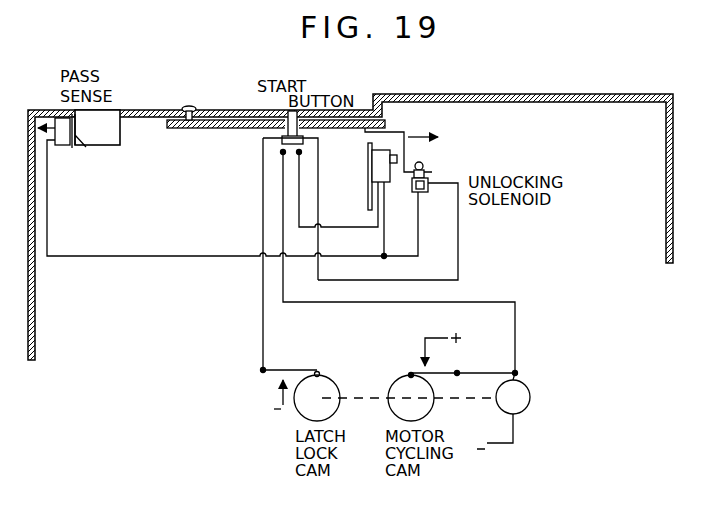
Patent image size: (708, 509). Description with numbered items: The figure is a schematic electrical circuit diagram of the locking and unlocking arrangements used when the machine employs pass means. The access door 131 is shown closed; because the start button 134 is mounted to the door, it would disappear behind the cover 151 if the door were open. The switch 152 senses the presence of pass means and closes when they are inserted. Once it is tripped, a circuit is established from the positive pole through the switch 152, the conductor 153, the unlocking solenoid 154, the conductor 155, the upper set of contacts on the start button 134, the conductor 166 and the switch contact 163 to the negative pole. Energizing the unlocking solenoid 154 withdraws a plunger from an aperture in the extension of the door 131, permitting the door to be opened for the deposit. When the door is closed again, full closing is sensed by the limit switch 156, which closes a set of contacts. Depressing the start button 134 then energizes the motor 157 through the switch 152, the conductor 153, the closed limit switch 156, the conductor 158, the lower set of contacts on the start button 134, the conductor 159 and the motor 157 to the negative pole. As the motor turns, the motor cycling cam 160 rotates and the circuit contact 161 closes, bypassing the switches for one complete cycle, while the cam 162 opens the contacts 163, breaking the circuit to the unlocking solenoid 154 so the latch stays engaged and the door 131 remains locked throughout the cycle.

The access door 131 is at (212, 130).
The start button 134 is at (287, 117).
The cover 151 is at (510, 93).
The switch 152 is at (60, 147).
The conductor 153 is at (133, 255).
The unlocking solenoid 154 is at (420, 193).
The conductor 155 is at (322, 178).
The limit switch 156 is at (378, 167).
The motor 157 is at (523, 403).
The conductor 158 is at (348, 225).
The conductor 159 is at (322, 303).
The motor cycling cam 160 is at (400, 392).
The circuit contact 161 is at (422, 363).
The cam 162 is at (313, 400).
The switch contact 163 is at (276, 377).
The conductor 166 is at (262, 289).